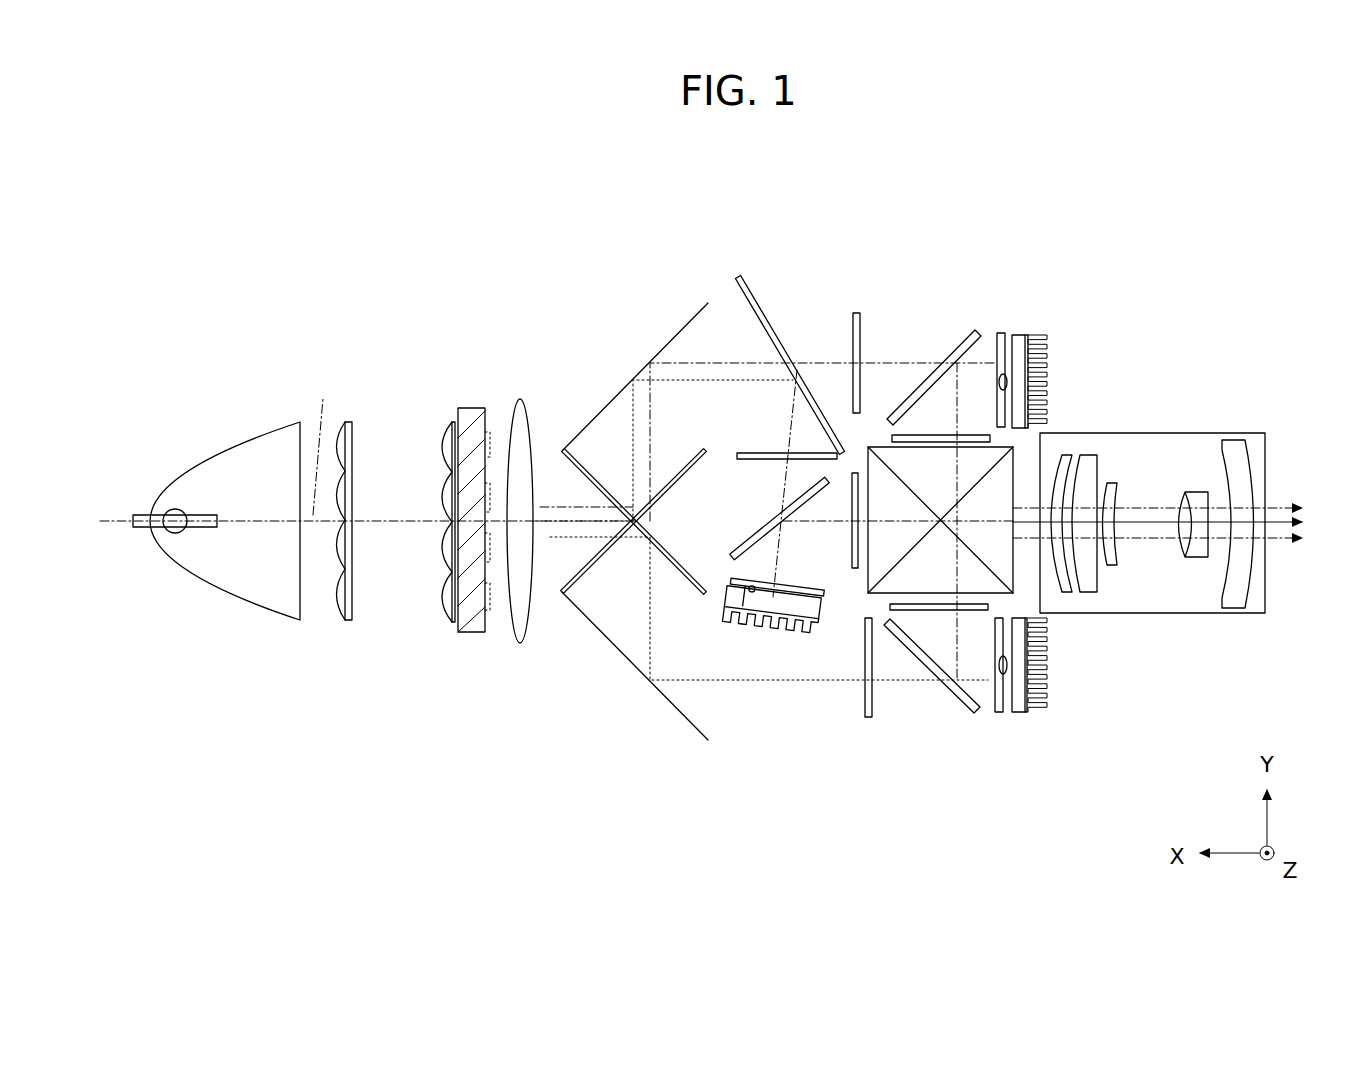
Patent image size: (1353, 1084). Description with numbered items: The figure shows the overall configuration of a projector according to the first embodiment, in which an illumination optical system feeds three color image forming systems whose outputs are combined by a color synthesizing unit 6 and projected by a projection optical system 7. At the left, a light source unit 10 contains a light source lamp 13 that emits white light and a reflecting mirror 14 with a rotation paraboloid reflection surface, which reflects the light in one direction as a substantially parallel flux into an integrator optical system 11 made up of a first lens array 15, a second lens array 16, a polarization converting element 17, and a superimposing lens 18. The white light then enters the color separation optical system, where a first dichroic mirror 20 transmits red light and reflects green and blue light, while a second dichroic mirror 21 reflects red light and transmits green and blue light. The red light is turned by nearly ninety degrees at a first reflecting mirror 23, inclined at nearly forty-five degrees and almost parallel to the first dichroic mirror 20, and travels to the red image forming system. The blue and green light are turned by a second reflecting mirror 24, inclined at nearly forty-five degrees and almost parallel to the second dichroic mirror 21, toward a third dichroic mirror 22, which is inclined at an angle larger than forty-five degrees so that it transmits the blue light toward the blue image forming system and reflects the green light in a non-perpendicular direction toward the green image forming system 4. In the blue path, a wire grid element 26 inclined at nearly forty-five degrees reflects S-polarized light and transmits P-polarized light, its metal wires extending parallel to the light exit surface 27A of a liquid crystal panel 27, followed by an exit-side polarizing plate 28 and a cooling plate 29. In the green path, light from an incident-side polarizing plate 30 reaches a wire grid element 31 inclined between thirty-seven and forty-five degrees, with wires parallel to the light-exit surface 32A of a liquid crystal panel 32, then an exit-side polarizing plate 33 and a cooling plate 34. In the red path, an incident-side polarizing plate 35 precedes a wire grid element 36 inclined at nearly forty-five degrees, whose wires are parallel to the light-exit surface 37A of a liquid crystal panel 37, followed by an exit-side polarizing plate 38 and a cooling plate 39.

The green image forming system 4 is at (785, 690).
The color synthesizing unit 6 is at (1000, 565).
The projection optical system 7 is at (1145, 602).
The light source unit 10 is at (216, 555).
The integrator optical system 11 is at (436, 569).
The light source lamp 13 is at (175, 533).
The reflecting mirror 14 is at (205, 596).
The first lens array 15 is at (344, 614).
The second lens array 16 is at (446, 610).
The polarization converting element 17 is at (470, 634).
The superimposing lens 18 is at (525, 548).
The first dichroic mirror 20 is at (690, 462).
The second dichroic mirror 21 is at (685, 577).
The third dichroic mirror 22 is at (766, 305).
The first reflecting mirror 23 is at (668, 705).
The second reflecting mirror 24 is at (669, 324).
The wire grid element 26 is at (973, 330).
The liquid crystal panel 27 is at (997, 332).
The light exit surface 27A is at (1006, 381).
The exit-side polarizing plate 28 is at (930, 434).
The cooling plate 29 is at (1033, 333).
The incident-side polarizing plate 30 is at (763, 452).
The wire grid element 31 is at (762, 530).
The liquid crystal panel 32 is at (826, 596).
The light-exit surface 32A is at (743, 600).
The exit-side polarizing plate 33 is at (851, 562).
The cooling plate 34 is at (827, 635).
The incident-side polarizing plate 35 is at (868, 718).
The wire grid element 36 is at (972, 694).
The liquid crystal panel 37 is at (997, 716).
The light-exit surface 37A is at (1006, 664).
The exit-side polarizing plate 38 is at (923, 612).
The cooling plate 39 is at (1032, 714).